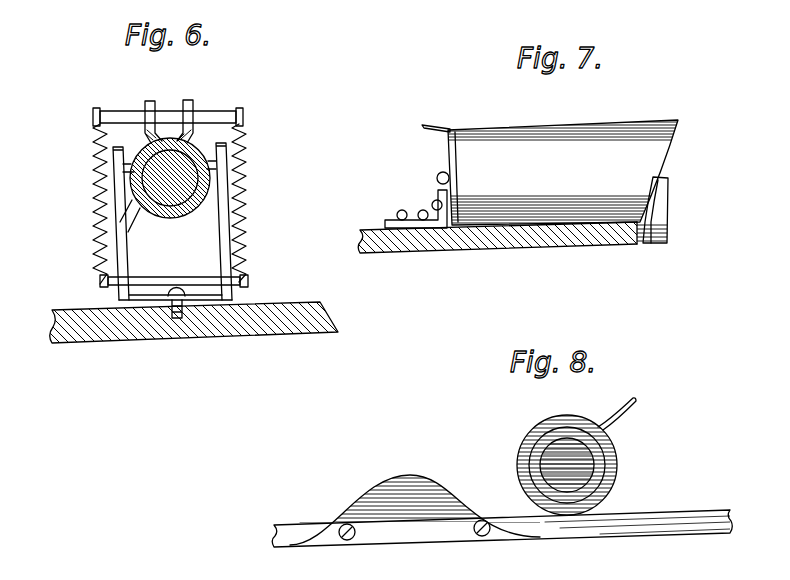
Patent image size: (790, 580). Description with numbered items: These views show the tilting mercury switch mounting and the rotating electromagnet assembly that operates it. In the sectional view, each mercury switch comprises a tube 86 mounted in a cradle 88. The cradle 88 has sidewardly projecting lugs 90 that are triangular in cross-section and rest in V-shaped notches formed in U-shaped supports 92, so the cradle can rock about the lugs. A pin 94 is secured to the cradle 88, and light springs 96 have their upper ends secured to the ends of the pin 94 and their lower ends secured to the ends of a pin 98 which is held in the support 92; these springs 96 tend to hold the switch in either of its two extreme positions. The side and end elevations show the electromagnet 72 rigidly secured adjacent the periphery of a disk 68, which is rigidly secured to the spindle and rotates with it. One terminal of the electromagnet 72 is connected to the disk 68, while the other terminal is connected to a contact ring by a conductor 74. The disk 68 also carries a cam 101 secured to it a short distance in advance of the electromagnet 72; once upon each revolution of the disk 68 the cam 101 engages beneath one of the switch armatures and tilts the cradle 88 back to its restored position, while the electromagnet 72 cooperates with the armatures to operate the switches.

In FIG. 6, the disk 68 is at (283, 333).
In FIG. 7, the disk 68 is at (572, 242).
In FIG. 8, the disk 68 is at (656, 525).
In FIG. 7, the electromagnet 72 is at (540, 129).
In FIG. 8, the electromagnet 72 is at (617, 467).
In FIG. 7, the conductor 74 is at (440, 124).
In FIG. 8, the conductor 74 is at (626, 422).
In FIG. 6, the tube 86 is at (178, 166).
In FIG. 6, the cradle 88 is at (150, 210).
In FIG. 6, the lugs 90 is at (270, 175).
In FIG. 6, the U-shaped supports 92 is at (226, 259).
In FIG. 6, the pin 94 is at (233, 97).
In FIG. 6, the light springs 96 is at (248, 213).
In FIG. 6, the pin 98 is at (173, 280).
In FIG. 7, the cam 101 is at (665, 213).
In FIG. 8, the cam 101 is at (438, 488).